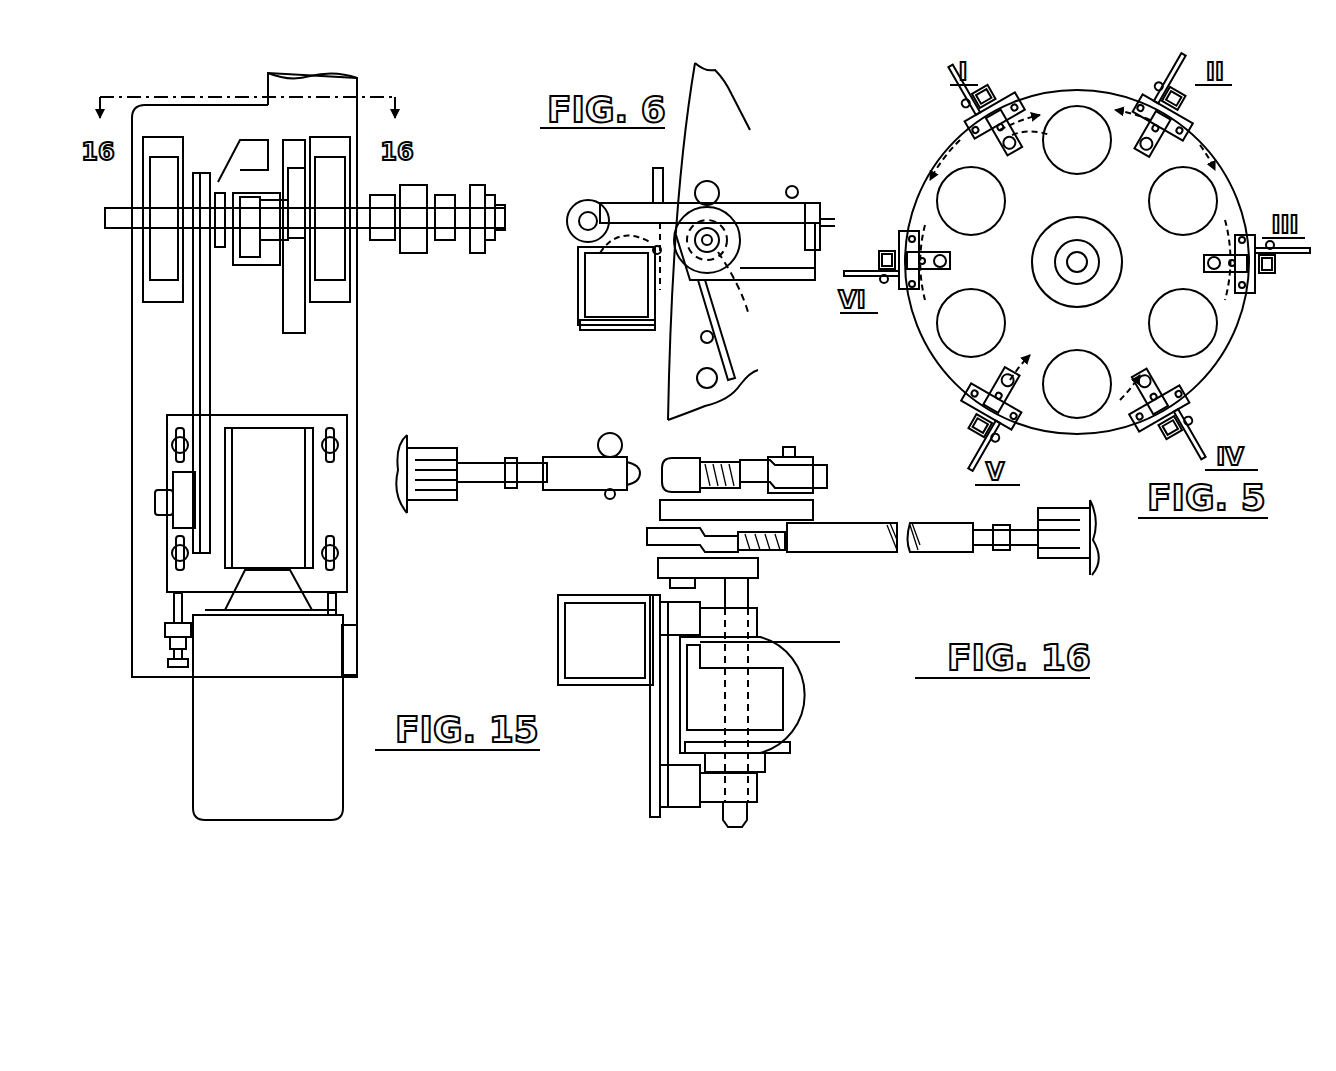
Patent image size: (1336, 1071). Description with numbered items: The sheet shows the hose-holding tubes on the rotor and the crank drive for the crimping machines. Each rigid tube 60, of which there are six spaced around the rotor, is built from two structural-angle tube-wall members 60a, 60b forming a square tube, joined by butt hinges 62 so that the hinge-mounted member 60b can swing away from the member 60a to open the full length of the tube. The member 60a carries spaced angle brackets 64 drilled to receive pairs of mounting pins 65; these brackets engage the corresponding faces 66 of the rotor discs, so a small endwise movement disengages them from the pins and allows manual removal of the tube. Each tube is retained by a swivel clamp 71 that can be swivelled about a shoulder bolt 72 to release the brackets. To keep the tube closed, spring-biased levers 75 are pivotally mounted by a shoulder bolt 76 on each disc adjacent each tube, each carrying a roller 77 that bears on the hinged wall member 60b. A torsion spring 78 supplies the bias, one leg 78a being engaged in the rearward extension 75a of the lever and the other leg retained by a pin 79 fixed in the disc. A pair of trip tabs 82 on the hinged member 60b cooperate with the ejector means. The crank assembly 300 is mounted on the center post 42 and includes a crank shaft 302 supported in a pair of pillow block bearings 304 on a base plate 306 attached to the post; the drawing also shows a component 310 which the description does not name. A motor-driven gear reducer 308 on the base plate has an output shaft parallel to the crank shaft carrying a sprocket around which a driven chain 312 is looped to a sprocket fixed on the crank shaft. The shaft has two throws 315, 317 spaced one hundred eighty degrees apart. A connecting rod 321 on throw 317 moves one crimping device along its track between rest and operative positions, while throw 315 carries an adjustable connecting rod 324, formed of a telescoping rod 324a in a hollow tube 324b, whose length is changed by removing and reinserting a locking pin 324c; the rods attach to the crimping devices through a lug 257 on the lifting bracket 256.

In FIG. 15, the center post 42 is at (353, 82).
In FIG. 6, the rigid tube 60 is at (573, 318).
In FIG. 5, the rigid tube 60 is at (985, 100).
In FIG. 6, the tube-wall member 60a is at (617, 326).
In FIG. 6, the tube-wall member 60b is at (580, 285).
In FIG. 6, the butt hinges 62 is at (633, 247).
In FIG. 6, the angle brackets 64 is at (660, 172).
In FIG. 5, the angle brackets 64 is at (1012, 112).
In FIG. 6, the mounting pins 65 is at (707, 181).
In FIG. 5, the mounting pins 65 is at (970, 145).
In FIG. 6, the faces 66 is at (728, 112).
In FIG. 5, the faces 66 is at (925, 325).
In FIG. 5, the swivel clamp 71 is at (1030, 140).
In FIG. 5, the shoulder bolt 72 is at (1020, 137).
In FIG. 6, the spring-biased lever 75 is at (787, 266).
In FIG. 6, the rearward extension 75a is at (810, 262).
In FIG. 6, the shoulder bolt 76 is at (712, 235).
In FIG. 6, the roller 77 is at (593, 200).
In FIG. 6, the torsion spring 78 is at (730, 316).
In FIG. 6, the leg 78a is at (832, 220).
In FIG. 6, the pin 79 is at (703, 340).
In FIG. 5, the trip tabs 82 is at (960, 100).
In FIG. 16, the lifting bracket 256 is at (403, 442).
In FIG. 16, the lug 257 is at (455, 458).
In FIG. 15, the crank assembly 300 is at (152, 682).
In FIG. 15, the crank shaft 302 is at (350, 215).
In FIG. 16, the crank shaft 302 is at (748, 590).
In FIG. 15, the pillow block bearings 304 is at (160, 255).
In FIG. 15, the base plate 306 is at (250, 388).
In FIG. 15, the motor-driven gear reducer 308 is at (295, 520).
In FIG. 15, the bracket 310 is at (200, 505).
In FIG. 15, the driven chain 312 is at (195, 372).
In FIG. 15, the crank throw 315 is at (480, 197).
In FIG. 16, the crank throw 315 is at (808, 500).
In FIG. 15, the crank throw 317 is at (415, 245).
In FIG. 16, the crank throw 317 is at (680, 565).
In FIG. 16, the connecting rod 321 is at (870, 548).
In FIG. 16, the connecting rod 324 is at (565, 465).
In FIG. 16, the telescoping rod 324a is at (480, 480).
In FIG. 16, the hollow tube 324b is at (602, 478).
In FIG. 16, the locking pin 324c is at (622, 445).